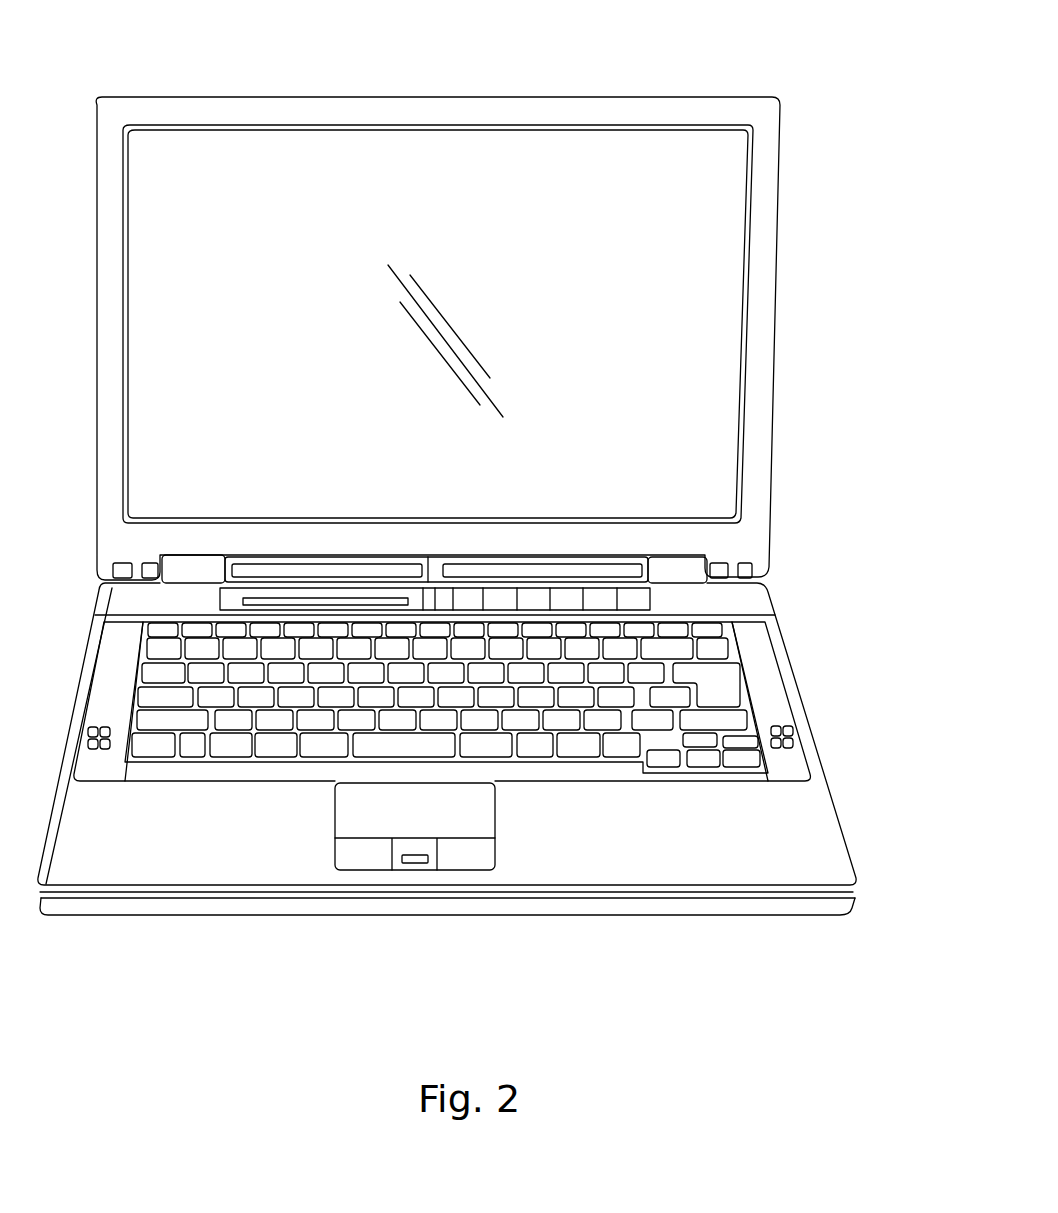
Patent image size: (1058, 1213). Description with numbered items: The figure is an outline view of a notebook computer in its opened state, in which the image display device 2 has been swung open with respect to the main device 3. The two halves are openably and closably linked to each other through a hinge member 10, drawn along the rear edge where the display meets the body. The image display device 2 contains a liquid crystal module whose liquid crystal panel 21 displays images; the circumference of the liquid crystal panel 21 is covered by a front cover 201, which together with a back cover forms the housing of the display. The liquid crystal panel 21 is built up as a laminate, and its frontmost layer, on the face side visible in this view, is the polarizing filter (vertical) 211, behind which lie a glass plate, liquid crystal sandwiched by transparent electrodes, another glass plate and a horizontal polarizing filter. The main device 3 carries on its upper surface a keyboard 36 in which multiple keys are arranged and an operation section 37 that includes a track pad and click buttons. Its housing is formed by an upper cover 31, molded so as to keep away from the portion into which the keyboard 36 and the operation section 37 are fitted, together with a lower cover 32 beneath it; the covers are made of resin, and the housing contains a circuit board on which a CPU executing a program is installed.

The image display device 2 is at (712, 77).
The liquid crystal panel 21 is at (480, 338).
The front cover 201 is at (762, 337).
The polarizing filter (vertical) 211 is at (715, 192).
The hinge member 10 is at (667, 568).
The main device 3 is at (494, 803).
The upper cover 31 is at (823, 872).
The lower cover 32 is at (753, 907).
The keyboard 36 is at (722, 686).
The operation section 37 is at (369, 828).